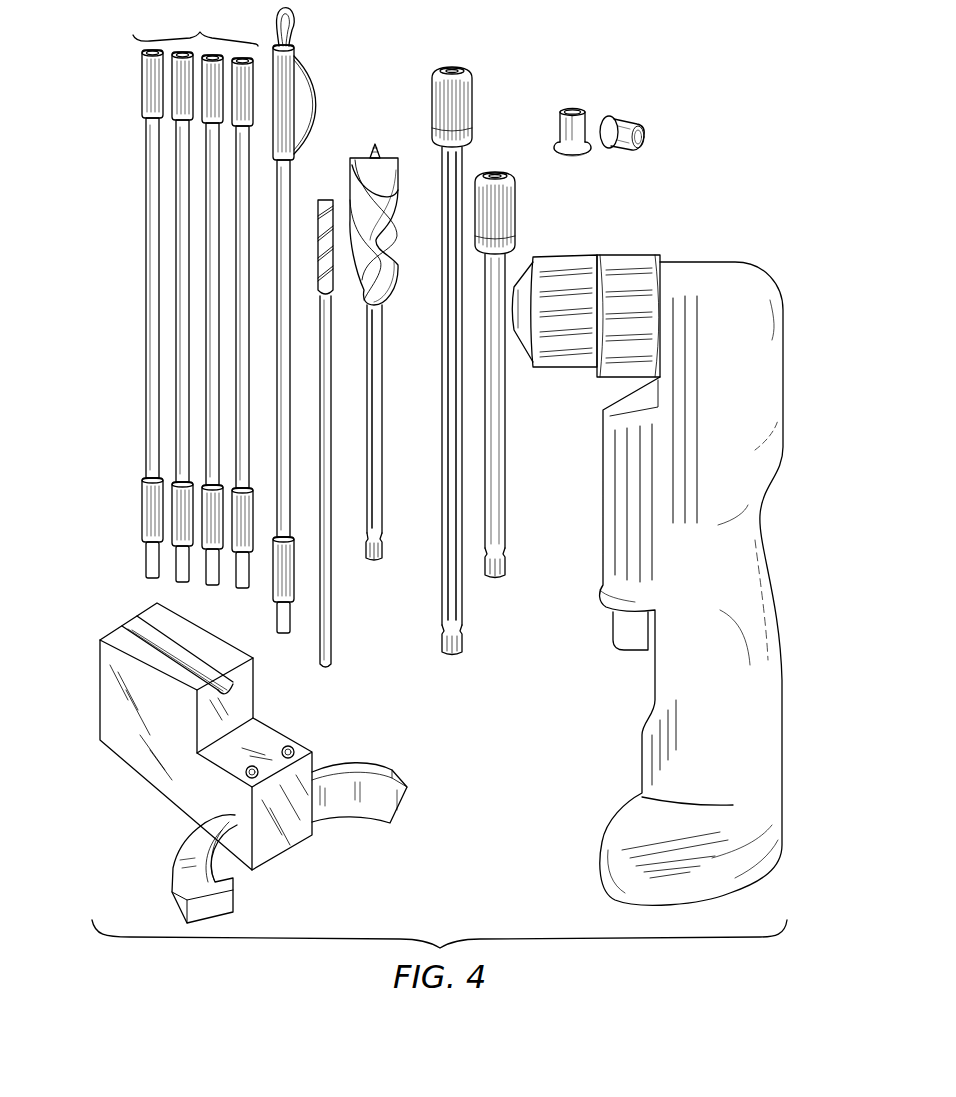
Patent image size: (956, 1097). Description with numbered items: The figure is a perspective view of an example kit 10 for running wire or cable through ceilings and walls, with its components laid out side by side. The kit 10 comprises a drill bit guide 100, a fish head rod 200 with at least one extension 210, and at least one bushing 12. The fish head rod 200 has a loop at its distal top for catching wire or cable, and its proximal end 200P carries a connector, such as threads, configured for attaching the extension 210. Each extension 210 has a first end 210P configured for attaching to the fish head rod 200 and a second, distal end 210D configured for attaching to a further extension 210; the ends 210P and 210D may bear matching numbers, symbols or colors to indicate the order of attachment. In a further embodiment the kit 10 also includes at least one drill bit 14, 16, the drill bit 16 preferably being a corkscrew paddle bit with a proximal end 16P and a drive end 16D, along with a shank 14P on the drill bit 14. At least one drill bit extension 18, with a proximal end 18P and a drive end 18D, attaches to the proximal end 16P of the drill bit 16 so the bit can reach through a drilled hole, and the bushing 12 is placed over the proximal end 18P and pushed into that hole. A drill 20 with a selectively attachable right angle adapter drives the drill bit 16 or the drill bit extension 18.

The kit 10 is at (617, 80).
The bushing 12 is at (580, 155).
The drill bit 14 is at (343, 421).
The drill bit shaft 14P is at (333, 648).
The corkscrew paddle bit 16 is at (392, 347).
The proximal end of the drill bit 16P is at (379, 160).
The auger bit drive end 16D is at (383, 554).
The drill bit extension 18 is at (498, 355).
The proximal end of the drill bit extension 18P is at (473, 108).
The driver drive end 18D is at (505, 574).
The drill 20 is at (695, 285).
The drill bit guide 100 is at (250, 692).
The fish head rod 200 is at (291, 320).
The proximal end of the fish head rod 200P is at (276, 620).
The extension 210 is at (168, 300).
The distal end of the extension 210D is at (142, 82).
The first end of the extension 210P is at (142, 516).